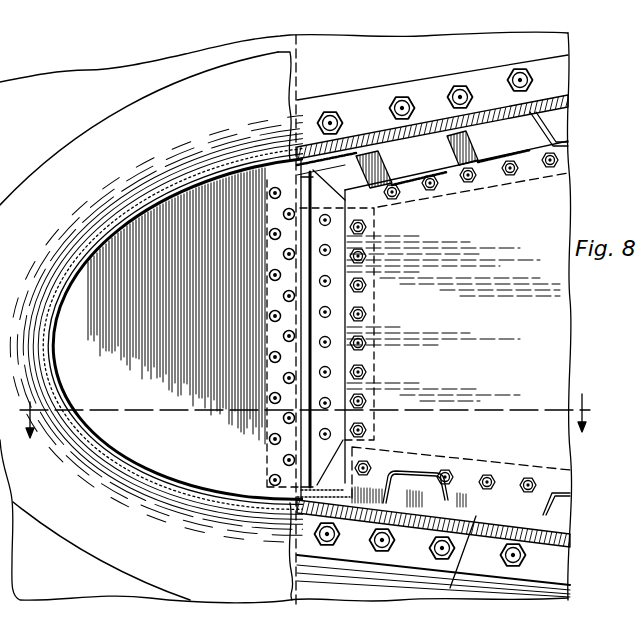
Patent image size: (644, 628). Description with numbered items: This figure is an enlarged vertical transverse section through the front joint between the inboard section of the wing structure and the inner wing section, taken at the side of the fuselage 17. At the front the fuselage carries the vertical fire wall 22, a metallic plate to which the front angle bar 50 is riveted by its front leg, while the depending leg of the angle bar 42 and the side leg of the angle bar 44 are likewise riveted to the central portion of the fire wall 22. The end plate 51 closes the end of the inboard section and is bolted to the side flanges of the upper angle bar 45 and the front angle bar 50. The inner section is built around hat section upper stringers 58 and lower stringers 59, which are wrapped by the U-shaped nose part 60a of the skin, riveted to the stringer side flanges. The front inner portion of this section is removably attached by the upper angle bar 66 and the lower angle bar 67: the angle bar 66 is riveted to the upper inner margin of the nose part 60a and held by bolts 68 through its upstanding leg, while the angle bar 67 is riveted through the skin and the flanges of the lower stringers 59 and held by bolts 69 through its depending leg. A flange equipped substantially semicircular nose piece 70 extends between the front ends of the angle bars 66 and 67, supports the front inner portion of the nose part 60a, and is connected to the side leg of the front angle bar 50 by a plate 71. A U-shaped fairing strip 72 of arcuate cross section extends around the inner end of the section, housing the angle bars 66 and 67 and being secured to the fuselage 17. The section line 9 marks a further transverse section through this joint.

The section line 9- 9 is at (307, 416).
The fuselage 17 is at (567, 48).
The fire wall 22 is at (300, 72).
The angle bar 42 is at (333, 160).
The angle bar 44 is at (433, 580).
The upper angle bar 45 is at (492, 150).
The front angle bar 50 is at (377, 297).
The end plate 51 is at (566, 320).
The upper stringers 58 is at (555, 134).
The lower stringers 59 is at (416, 476).
The nose part of the skin 60a is at (461, 555).
The upper angle bar 66 is at (567, 86).
The lower angle bar 67 is at (568, 563).
The bolts 68 is at (520, 80).
The bolts 69 is at (513, 568).
The nose piece 70 is at (128, 425).
The plate 71 is at (318, 362).
The fairing strip 72 is at (92, 160).